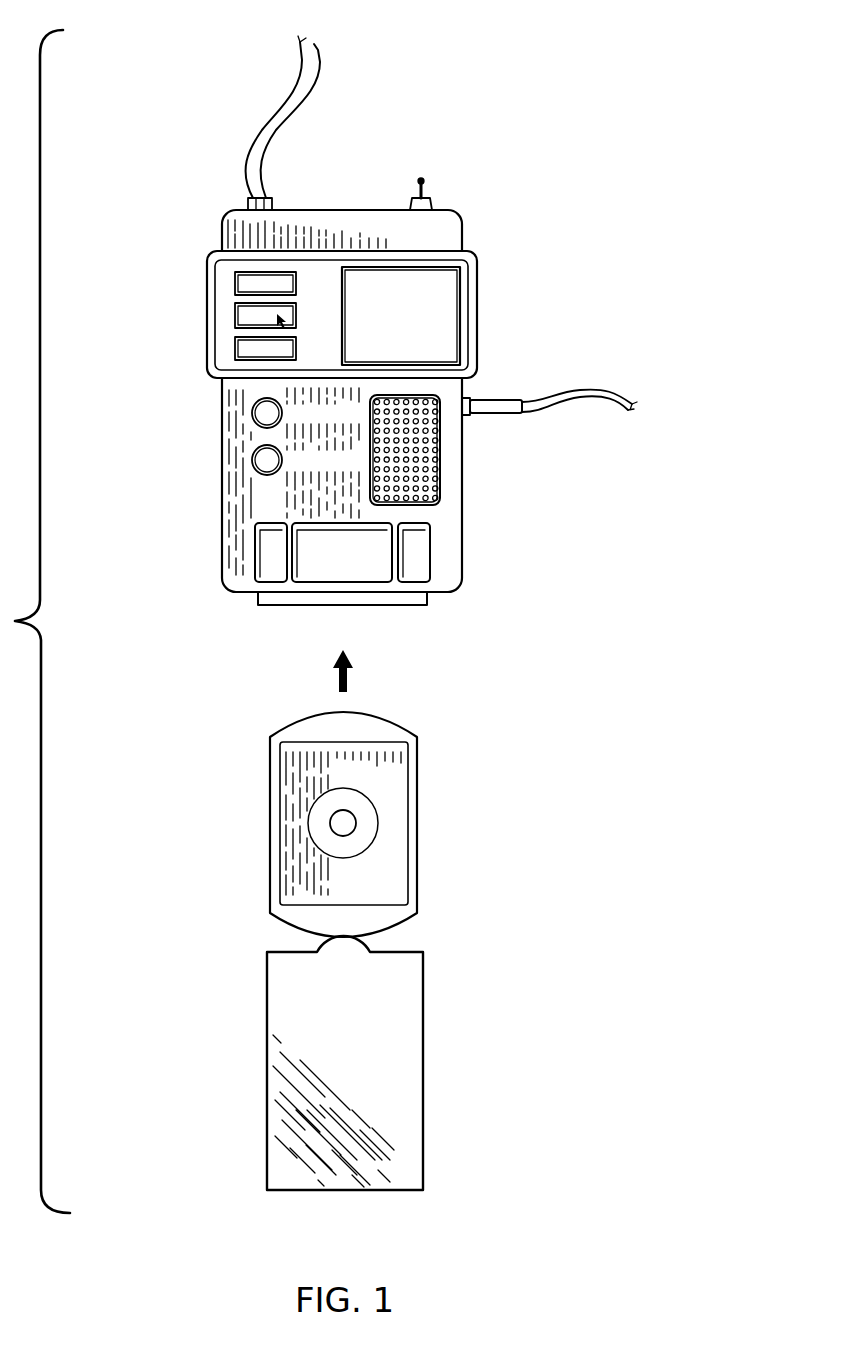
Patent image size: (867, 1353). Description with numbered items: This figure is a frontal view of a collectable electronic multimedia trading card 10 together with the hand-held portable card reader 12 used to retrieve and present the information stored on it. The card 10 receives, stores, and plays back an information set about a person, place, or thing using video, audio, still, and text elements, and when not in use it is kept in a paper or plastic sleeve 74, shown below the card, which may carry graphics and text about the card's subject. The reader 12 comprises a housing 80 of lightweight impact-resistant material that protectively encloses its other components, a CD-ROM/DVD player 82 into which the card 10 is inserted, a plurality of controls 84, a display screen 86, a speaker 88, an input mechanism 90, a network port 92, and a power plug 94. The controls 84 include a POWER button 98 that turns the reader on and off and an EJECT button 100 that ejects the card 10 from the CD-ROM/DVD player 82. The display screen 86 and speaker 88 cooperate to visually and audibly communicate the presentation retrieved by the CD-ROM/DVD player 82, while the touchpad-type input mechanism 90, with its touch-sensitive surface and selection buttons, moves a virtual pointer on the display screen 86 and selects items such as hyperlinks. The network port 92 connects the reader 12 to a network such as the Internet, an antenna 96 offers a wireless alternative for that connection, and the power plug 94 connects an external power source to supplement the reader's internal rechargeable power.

The collectable electronic multimedia trading card 10 is at (258, 781).
The hand-held portable card reader 12 is at (683, 88).
The sleeve 74 is at (260, 1090).
The housing 80 is at (205, 522).
The CD-ROM/DVD player 82 is at (295, 603).
The plurality of controls 84 is at (228, 431).
The display screen 86 is at (462, 290).
The speaker 88 is at (435, 485).
The input mechanism 90 is at (344, 577).
The network port 92 is at (248, 205).
The power plug 94 is at (470, 397).
The antenna 96 is at (432, 200).
The POWER button 98 is at (258, 407).
The EJECT button 100 is at (258, 464).